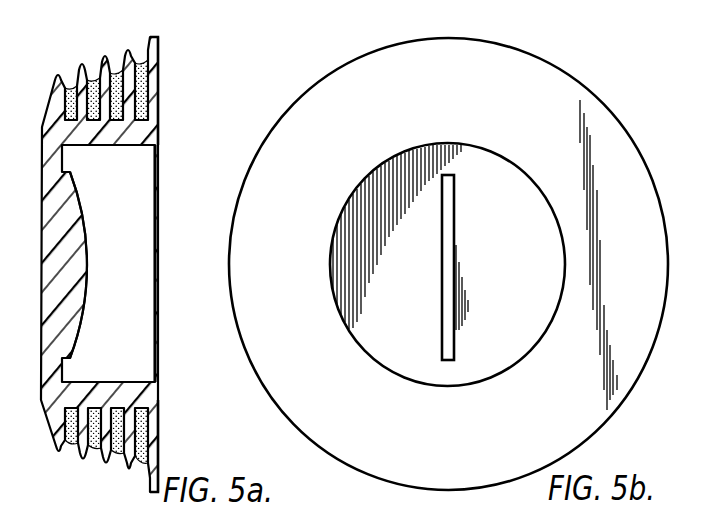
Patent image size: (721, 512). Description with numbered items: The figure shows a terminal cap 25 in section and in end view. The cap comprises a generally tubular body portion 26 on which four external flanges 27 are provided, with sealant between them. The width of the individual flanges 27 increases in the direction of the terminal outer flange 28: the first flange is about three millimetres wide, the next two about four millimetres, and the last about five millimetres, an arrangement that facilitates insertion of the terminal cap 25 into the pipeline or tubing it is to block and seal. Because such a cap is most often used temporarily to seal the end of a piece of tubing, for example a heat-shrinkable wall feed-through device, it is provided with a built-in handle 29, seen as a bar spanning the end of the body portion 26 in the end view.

In FIG. 5A, the terminal cap 25 is at (153, 465).
In FIG. 5B, the terminal cap 25 is at (530, 78).
In FIG. 5A, the generally tubular body portion 26 is at (82, 130).
In FIG. 5A, the external flanges 27 is at (145, 470).
In FIG. 5A, the terminal outer flange 28 is at (153, 92).
In FIG. 5A, the built-in handle 29 is at (84, 266).
In FIG. 5B, the built-in handle 29 is at (454, 224).